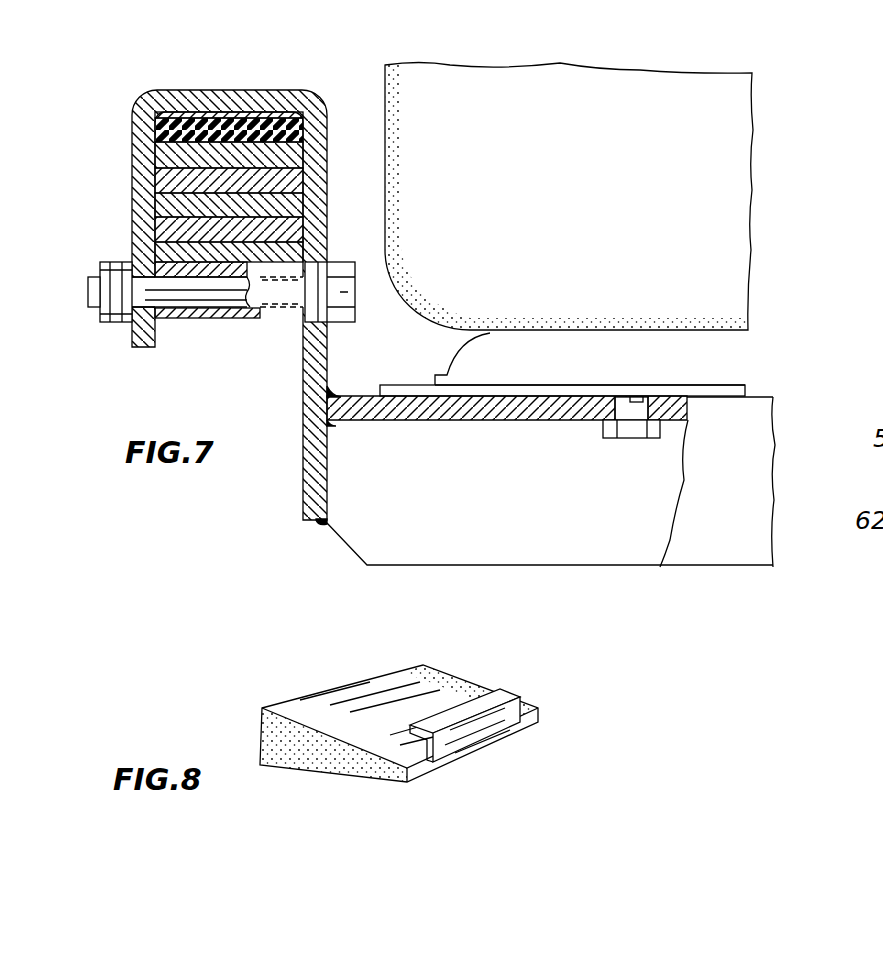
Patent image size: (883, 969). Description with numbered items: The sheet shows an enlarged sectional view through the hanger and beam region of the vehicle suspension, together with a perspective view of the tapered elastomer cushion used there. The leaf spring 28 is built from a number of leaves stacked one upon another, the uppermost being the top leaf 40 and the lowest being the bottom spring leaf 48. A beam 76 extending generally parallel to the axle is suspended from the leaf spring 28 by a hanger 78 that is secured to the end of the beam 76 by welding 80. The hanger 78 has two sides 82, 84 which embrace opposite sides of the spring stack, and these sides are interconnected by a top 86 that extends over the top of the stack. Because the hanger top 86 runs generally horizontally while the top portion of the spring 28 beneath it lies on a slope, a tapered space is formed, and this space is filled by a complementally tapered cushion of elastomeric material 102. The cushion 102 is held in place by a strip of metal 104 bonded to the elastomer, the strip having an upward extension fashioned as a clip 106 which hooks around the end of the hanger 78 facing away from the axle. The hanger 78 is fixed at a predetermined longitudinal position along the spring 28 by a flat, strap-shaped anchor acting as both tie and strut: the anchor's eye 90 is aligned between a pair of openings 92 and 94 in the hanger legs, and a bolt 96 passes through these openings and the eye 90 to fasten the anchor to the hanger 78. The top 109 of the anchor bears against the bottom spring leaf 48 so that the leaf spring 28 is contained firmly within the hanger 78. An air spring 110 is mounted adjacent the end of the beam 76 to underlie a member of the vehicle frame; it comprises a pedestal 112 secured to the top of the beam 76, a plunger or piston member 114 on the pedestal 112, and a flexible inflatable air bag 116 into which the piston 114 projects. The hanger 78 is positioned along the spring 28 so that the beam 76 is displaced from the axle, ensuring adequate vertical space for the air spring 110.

In FIG. 7, the spring 28 is at (145, 155).
In FIG. 7, the top leaf 40 is at (293, 158).
In FIG. 7, the bottom spring leaf 48 is at (293, 248).
In FIG. 7, the beam 76 is at (617, 557).
In FIG. 7, the hanger 78 is at (300, 378).
In FIG. 7, the welding 80 is at (331, 392).
In FIG. 7, the hanger side 82 is at (320, 203).
In FIG. 7, the hanger side 84 is at (137, 212).
In FIG. 7, the hanger top 86 is at (238, 94).
In FIG. 7, the eye 90 is at (237, 316).
In FIG. 7, the opening 92 is at (313, 313).
In FIG. 7, the opening 94 is at (145, 310).
In FIG. 7, the bolt 96 is at (193, 302).
In FIG. 7, the cushion of elastomeric material 102 is at (293, 126).
In FIG. 8, the cushion of elastomeric material 102 is at (338, 765).
In FIG. 7, the strip of metal 104 is at (188, 112).
In FIG. 8, the strip of metal 104 is at (355, 690).
In FIG. 8, the clip 106 is at (520, 702).
In FIG. 7, the top of anchor 109 is at (180, 258).
In FIG. 7, the air spring 110 is at (790, 161).
In FIG. 7, the pedestal 112 is at (513, 396).
In FIG. 7, the plunger or piston member 114 is at (735, 360).
In FIG. 7, the flexible inflatable air bag 116 is at (752, 243).